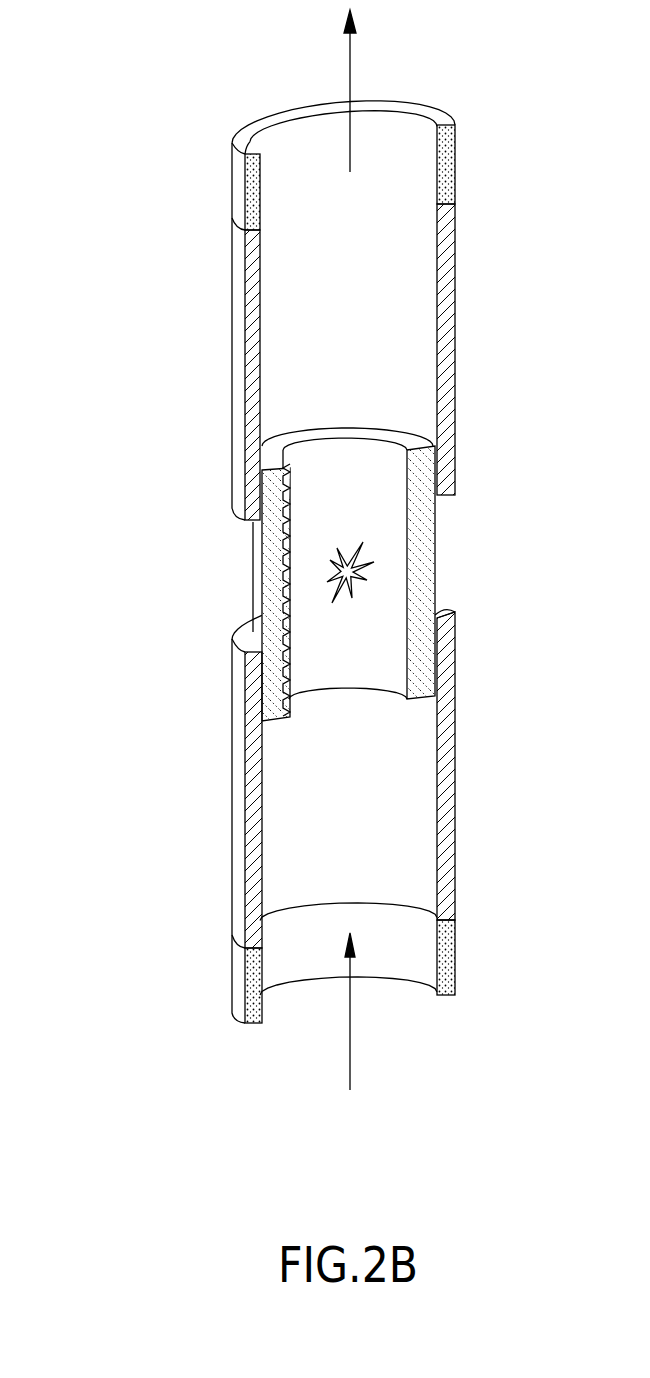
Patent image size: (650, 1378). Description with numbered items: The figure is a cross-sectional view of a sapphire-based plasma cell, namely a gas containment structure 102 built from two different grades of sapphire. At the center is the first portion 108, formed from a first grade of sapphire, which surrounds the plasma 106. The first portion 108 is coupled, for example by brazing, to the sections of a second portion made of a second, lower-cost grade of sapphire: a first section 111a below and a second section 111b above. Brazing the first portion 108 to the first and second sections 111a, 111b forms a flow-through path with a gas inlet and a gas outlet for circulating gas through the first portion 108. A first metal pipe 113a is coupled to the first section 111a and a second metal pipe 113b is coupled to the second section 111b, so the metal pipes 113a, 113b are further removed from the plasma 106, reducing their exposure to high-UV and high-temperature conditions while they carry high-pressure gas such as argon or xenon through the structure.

The gas containment structure 102 is at (134, 36).
The plasma 106 is at (363, 565).
The first portion 108 is at (253, 576).
The first section 111a is at (232, 822).
The second section 111b is at (232, 325).
The first metal pipe 113a is at (232, 972).
The second metal pipe 113b is at (232, 183).